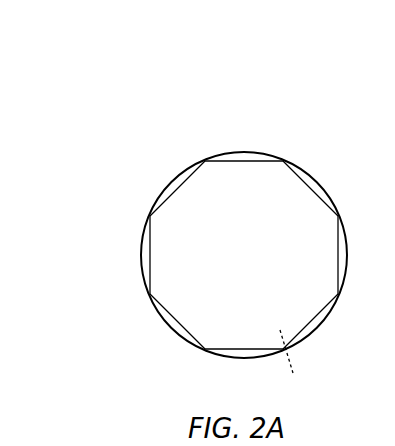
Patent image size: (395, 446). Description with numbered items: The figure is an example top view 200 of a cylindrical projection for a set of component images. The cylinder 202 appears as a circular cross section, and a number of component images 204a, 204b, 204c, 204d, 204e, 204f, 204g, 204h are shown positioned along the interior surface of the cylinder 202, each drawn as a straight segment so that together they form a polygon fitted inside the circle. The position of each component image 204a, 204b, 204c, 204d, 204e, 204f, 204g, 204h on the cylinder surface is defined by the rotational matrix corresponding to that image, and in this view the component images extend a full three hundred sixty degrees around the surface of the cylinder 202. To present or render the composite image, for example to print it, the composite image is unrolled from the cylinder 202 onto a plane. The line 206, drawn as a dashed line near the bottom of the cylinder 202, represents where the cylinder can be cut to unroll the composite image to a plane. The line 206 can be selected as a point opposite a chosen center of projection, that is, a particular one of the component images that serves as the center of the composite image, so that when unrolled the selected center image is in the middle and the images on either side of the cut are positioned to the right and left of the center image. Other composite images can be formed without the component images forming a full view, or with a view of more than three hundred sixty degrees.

The top view 200 is at (137, 76).
The cylinder 202 is at (172, 182).
The component image 204a is at (228, 162).
The component image 204b is at (182, 184).
The component image 204c is at (150, 235).
The component image 204d is at (172, 316).
The component image 204e is at (215, 348).
The component image 204f is at (311, 322).
The component image 204g is at (338, 235).
The component image 204h is at (310, 189).
The line 206 is at (297, 382).